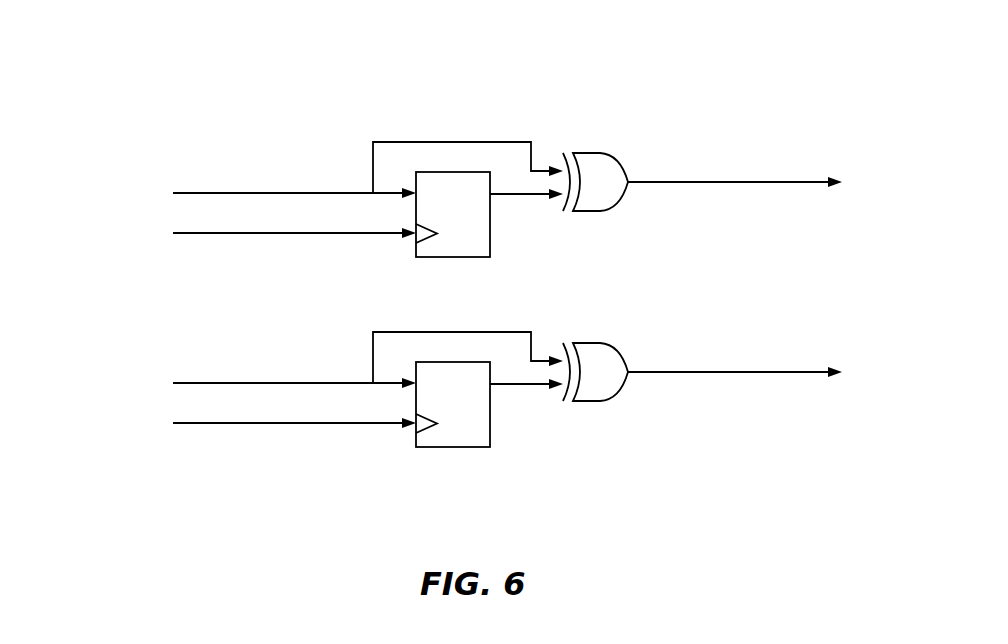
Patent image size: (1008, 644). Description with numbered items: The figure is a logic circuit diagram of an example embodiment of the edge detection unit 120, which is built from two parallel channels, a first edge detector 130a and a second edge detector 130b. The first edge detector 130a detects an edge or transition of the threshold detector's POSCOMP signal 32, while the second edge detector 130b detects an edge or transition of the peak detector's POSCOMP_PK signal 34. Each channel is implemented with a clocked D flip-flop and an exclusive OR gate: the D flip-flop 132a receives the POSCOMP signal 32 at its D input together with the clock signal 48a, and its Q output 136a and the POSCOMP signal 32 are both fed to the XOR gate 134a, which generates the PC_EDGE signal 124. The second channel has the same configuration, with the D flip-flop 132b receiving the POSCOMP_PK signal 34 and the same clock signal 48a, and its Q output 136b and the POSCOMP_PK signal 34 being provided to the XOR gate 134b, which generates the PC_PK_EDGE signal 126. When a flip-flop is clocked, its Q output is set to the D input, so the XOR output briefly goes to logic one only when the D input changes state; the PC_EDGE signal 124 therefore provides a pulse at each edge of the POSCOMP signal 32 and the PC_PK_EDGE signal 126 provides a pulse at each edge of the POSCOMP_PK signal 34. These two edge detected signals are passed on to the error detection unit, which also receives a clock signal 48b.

The edge detection unit 120 is at (724, 64).
The first edge detector 130a is at (117, 176).
The second edge detector 130b is at (117, 366).
The POSCOMP signal 32 is at (181, 193).
The POSCOMP_PK signal 34 is at (181, 383).
The clock signal 48a is at (312, 235).
The clock signal 48b is at (312, 425).
The D flip-flop 132a is at (452, 257).
The D flip-flop 132b is at (452, 447).
The XOR gate 134a is at (601, 153).
The XOR gate 134b is at (601, 343).
The output 136a is at (505, 194).
The output 136b is at (505, 384).
The PC_EDGE signal 124 is at (803, 184).
The PC_PK_EDGE signal 126 is at (803, 374).